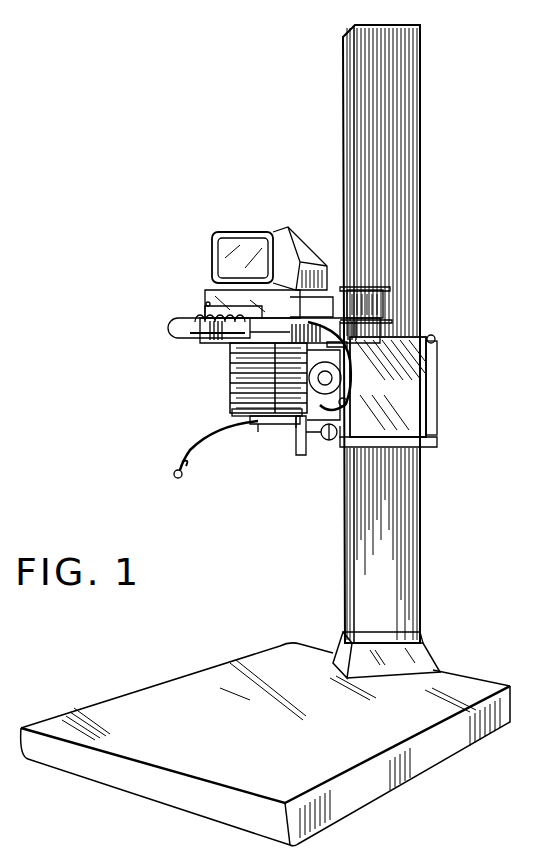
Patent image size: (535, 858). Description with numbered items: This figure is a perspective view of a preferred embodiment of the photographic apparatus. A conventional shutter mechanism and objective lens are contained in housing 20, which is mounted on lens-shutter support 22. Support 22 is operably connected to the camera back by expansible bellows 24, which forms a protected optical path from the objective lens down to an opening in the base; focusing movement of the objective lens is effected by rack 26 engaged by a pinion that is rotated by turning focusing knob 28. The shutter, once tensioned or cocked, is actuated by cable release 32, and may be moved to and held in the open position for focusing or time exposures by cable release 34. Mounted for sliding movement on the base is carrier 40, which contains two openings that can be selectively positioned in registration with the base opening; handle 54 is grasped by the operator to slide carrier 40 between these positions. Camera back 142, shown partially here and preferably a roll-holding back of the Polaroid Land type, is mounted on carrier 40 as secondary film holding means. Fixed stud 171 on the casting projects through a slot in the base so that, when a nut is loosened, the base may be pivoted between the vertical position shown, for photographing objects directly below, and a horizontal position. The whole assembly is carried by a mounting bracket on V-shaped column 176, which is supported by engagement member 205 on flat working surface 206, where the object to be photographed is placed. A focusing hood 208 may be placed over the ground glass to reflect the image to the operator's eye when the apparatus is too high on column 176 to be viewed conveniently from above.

The V-shaped column 176 is at (365, 133).
The focusing hood 208 is at (278, 231).
The camera back 142 is at (340, 287).
The handle 54 is at (205, 318).
The carrier 40 is at (175, 325).
The expansible bellows 24 is at (232, 375).
The lens-shutter support 22 is at (235, 411).
The cable release 32 is at (196, 437).
The housing 20 is at (258, 424).
The rack 26 is at (296, 446).
The focusing knob 28 is at (328, 441).
The fixed stud 171 is at (346, 404).
The cable release 34 is at (380, 390).
The engagement member 205 is at (338, 652).
The flat working surface 206 is at (233, 756).